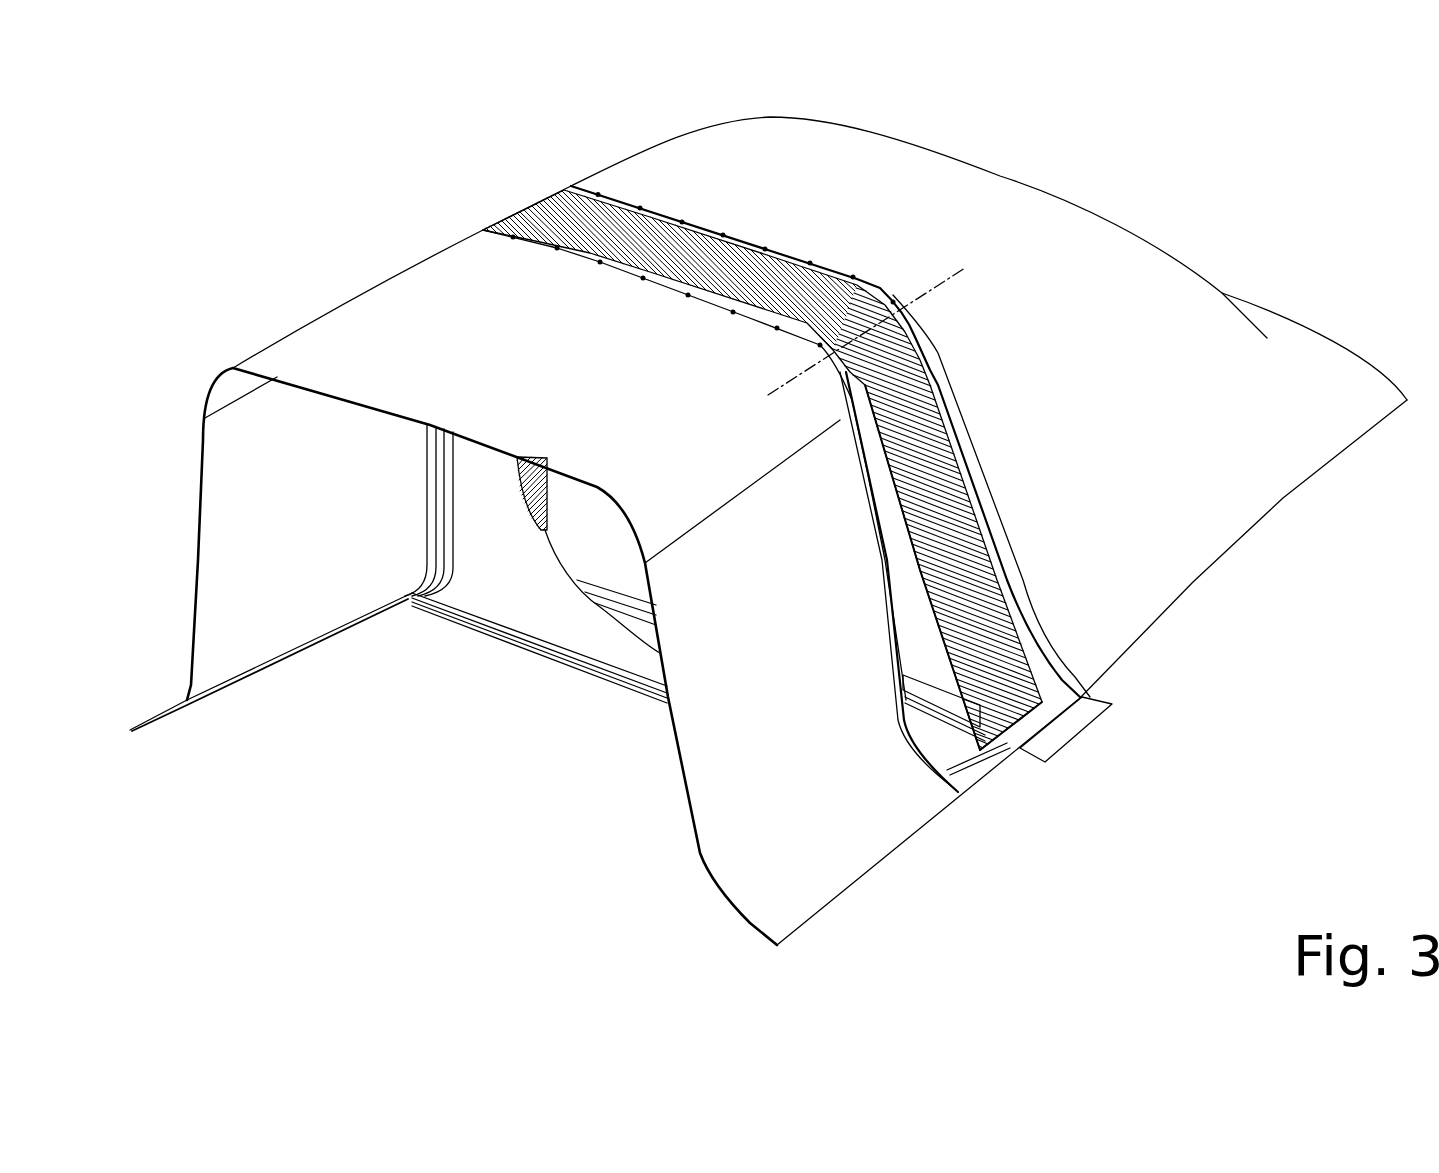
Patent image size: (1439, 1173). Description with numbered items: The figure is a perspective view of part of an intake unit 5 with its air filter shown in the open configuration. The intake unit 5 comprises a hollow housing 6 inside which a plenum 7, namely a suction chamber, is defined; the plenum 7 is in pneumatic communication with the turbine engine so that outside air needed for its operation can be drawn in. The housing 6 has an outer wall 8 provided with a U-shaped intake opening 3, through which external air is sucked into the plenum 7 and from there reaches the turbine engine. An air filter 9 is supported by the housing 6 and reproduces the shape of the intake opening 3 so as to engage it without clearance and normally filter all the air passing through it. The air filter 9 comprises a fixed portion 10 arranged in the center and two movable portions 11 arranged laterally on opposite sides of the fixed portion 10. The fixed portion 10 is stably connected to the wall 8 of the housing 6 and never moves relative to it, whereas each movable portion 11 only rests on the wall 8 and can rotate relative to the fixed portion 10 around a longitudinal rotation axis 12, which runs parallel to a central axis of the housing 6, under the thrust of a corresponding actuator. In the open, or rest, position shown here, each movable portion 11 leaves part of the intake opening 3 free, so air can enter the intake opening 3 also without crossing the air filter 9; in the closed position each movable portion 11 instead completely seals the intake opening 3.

The intake opening 3 is at (538, 248).
The intake unit 5 is at (177, 115).
The housing 6 is at (1204, 176).
The plenum 7 is at (427, 687).
The outer wall 8 is at (1115, 493).
The air filter 9 is at (445, 161).
The fixed portion 10 is at (996, 448).
The movable portion 11 is at (778, 226).
The rotation axis 12 is at (947, 278).